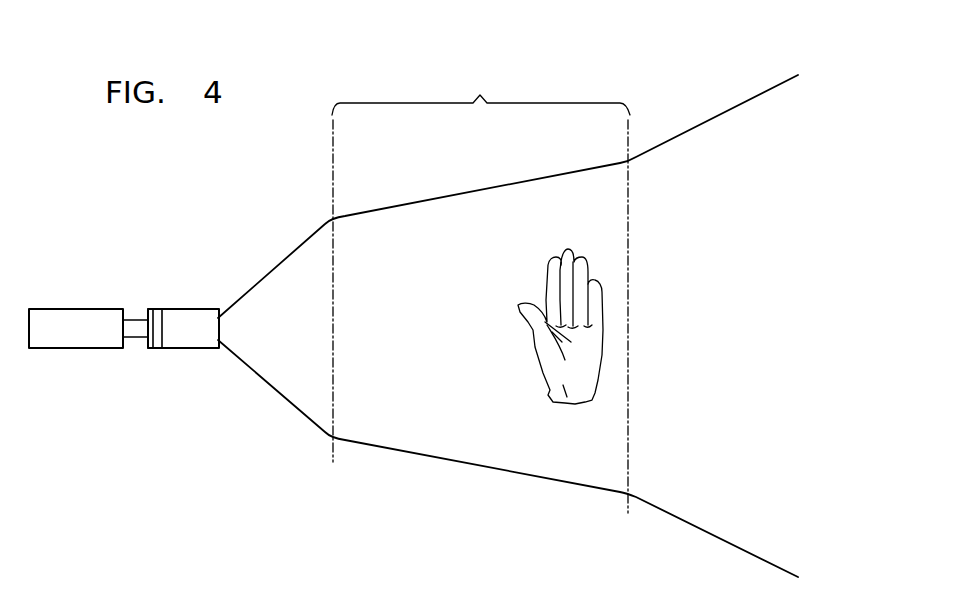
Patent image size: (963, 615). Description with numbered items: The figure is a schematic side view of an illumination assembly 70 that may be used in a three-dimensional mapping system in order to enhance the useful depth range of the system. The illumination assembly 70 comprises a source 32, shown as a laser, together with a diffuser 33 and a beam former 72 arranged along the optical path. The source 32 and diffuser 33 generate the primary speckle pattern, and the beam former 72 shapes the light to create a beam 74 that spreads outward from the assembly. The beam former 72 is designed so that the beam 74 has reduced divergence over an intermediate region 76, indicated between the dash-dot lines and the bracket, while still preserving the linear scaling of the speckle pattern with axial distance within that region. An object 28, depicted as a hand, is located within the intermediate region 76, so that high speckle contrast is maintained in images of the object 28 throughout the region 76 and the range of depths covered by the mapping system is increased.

The illumination assembly 70 is at (165, 197).
The source 32 is at (80, 309).
The diffuser 33 is at (155, 348).
The beam former 72 is at (182, 309).
The beam 74 is at (733, 106).
The intermediate region 76 is at (480, 95).
The object 28 is at (566, 403).